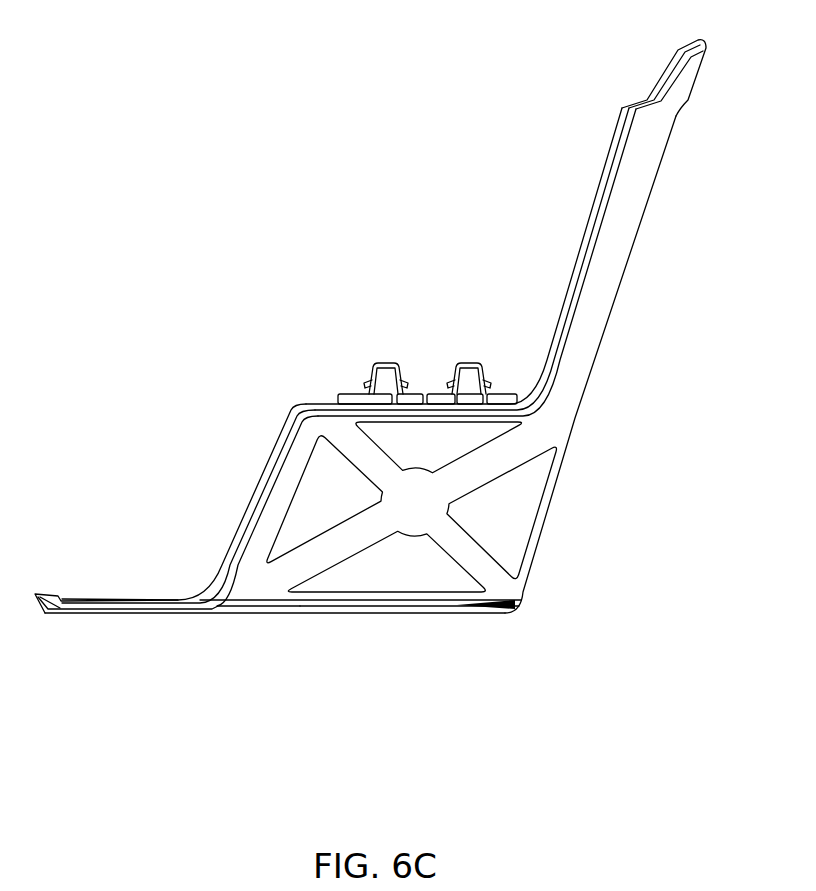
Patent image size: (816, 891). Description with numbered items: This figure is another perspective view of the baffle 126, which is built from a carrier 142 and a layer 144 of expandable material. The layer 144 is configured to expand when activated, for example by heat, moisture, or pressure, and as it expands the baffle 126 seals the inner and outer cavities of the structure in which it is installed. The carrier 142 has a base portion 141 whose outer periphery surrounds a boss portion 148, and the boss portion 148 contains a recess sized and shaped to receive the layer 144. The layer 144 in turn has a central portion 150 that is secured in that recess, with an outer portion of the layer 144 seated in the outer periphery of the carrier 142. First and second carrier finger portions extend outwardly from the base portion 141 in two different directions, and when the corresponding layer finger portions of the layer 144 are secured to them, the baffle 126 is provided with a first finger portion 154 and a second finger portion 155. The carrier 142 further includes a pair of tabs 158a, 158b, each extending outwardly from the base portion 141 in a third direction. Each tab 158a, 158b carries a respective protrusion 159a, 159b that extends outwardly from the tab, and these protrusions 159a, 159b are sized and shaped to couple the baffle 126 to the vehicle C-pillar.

The baffle 126 is at (366, 100).
The carrier 142 is at (625, 108).
The first finger portion 154 is at (610, 288).
The boss portion 148 is at (252, 504).
The second finger portion 155 is at (112, 608).
The layer of expandable material 144 is at (247, 607).
The base portion 141 is at (350, 577).
The central portion 150 is at (413, 525).
The tab 158a is at (481, 364).
The tab 158b is at (372, 365).
The protrusion 159a is at (470, 362).
The protrusion 159b is at (388, 362).